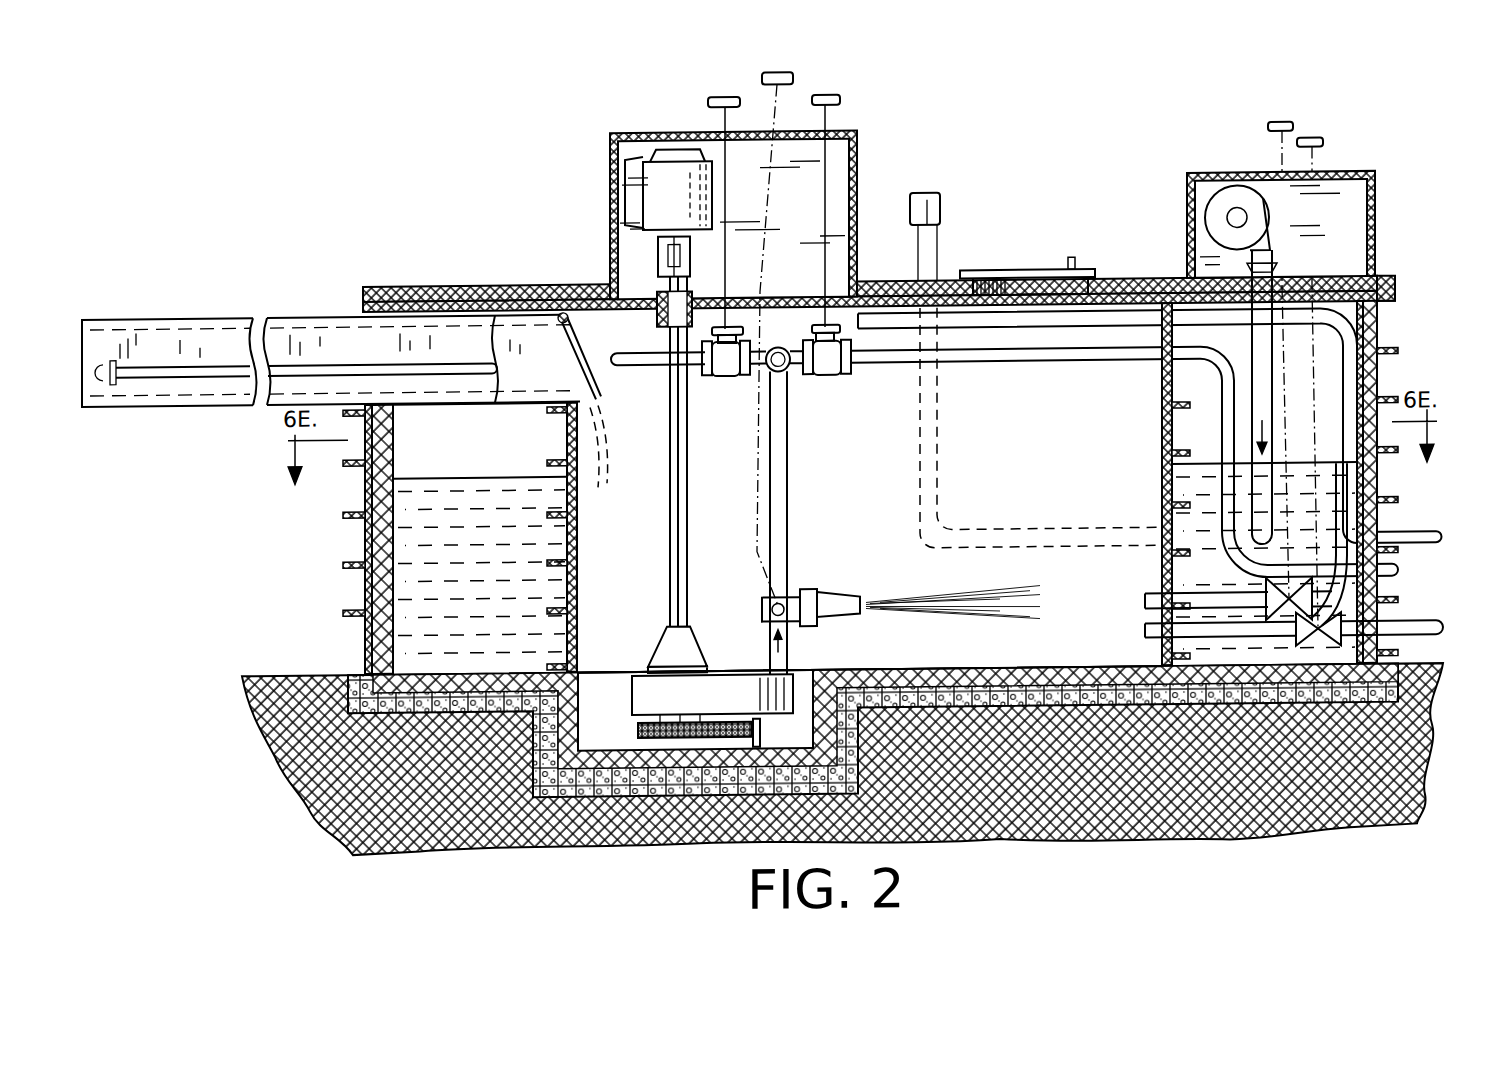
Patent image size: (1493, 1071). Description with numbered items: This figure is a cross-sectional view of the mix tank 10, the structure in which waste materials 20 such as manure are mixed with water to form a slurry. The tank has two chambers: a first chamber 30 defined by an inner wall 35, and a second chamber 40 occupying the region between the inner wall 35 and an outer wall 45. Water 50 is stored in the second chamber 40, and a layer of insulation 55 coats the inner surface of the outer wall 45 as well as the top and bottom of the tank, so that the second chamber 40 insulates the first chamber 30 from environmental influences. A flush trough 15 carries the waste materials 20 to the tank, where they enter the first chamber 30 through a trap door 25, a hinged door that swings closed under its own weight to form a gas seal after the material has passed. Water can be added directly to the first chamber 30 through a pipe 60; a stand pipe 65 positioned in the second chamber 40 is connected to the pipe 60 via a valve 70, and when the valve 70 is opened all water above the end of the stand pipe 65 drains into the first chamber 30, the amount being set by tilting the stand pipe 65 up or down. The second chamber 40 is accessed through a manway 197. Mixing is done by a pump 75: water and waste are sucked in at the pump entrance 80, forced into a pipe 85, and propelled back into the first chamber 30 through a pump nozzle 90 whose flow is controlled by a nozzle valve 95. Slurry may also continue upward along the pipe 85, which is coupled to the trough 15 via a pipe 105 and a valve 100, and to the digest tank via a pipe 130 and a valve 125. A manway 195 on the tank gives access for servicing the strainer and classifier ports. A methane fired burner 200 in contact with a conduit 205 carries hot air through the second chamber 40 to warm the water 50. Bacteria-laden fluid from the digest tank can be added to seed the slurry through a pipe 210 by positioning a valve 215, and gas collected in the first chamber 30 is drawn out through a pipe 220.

The mix tank 10 is at (290, 666).
The flush trough 15 is at (296, 319).
The waste materials 20 is at (645, 457).
The trap door 25 is at (580, 360).
The first chamber 30 is at (1070, 480).
The inner wall 35 is at (572, 566).
The second chamber 40 is at (493, 462).
The outer wall 45 is at (344, 600).
The water 50 is at (493, 598).
The insulation 55 is at (378, 544).
The pipe 60 is at (1152, 606).
The stand pipe 65 is at (1340, 478).
The valve 70 is at (1282, 136).
The pump 75 is at (655, 199).
The pump entrance 80 is at (632, 739).
The pipe 85 is at (791, 665).
The pump nozzle 90 is at (828, 599).
The nozzle valve 95 is at (785, 81).
The valve 100 is at (722, 105).
The pipe 105 is at (197, 381).
The valve 125 is at (830, 104).
The pipe 130 is at (1048, 373).
The manway 195 is at (1020, 281).
The manway 197 is at (1187, 186).
The methane fired burner 200 is at (1235, 228).
The conduit 205 is at (941, 216).
The pipe 210 is at (1419, 636).
The valve 215 is at (1320, 152).
The pipe 220 is at (1434, 538).